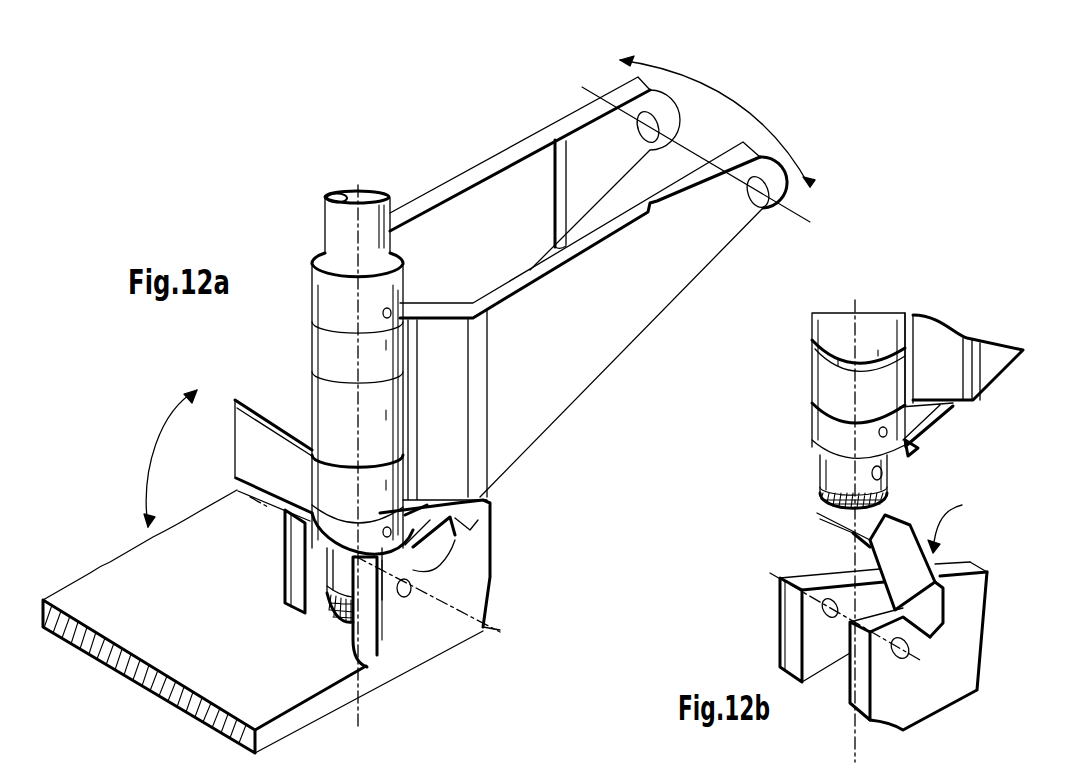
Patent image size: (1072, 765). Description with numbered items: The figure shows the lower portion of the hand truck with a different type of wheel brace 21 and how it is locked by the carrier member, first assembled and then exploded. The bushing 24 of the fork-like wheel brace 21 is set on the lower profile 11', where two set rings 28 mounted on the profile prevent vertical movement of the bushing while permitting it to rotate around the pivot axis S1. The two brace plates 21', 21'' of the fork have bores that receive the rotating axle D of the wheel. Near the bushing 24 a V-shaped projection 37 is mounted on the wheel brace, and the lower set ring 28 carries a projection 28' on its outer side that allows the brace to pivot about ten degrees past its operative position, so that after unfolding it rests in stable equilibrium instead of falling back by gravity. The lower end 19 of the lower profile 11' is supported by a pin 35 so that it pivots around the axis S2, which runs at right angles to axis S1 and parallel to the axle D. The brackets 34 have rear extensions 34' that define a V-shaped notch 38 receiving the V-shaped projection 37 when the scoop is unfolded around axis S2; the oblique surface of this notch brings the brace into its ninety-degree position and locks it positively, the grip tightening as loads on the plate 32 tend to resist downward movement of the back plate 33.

In FIG. 12A, the lower profile 11' is at (327, 222).
In FIG. 12A, the lower end 19 is at (324, 566).
In FIG. 12B, the lower end 19 is at (830, 470).
In FIG. 12B, the wheel brace 21 is at (968, 344).
In FIG. 12A, the brace plate 21' is at (593, 321).
In FIG. 12A, the brace plate 21'' is at (535, 173).
In FIG. 12A, the bushing 24 is at (326, 397).
In FIG. 12B, the bushing 24 is at (825, 325).
In FIG. 12A, the set ring 28 is at (303, 403).
In FIG. 12B, the set ring 28 is at (834, 430).
In FIG. 12A, the projection 28' is at (473, 544).
In FIG. 12B, the projection 28' is at (943, 456).
In FIG. 12A, the plate 32 is at (220, 618).
In FIG. 12A, the back plate 33 is at (281, 465).
In FIG. 12A, the bracket 34 is at (333, 593).
In FIG. 12B, the bracket 34 is at (872, 646).
In FIG. 12A, the rear extension 34' is at (463, 565).
In FIG. 12B, the rear extension 34' is at (923, 555).
In FIG. 12A, the pin 35 is at (410, 598).
In FIG. 12B, the V-shaped projection 37 is at (953, 408).
In FIG. 12B, the V-shaped notch 38 is at (959, 521).
In FIG. 12A, the pivot axis S1 is at (362, 188).
In FIG. 12B, the pivot axis S1 is at (858, 318).
In FIG. 12A, the pivot axis S2 is at (266, 505).
In FIG. 12A, the rotating axle D is at (572, 83).